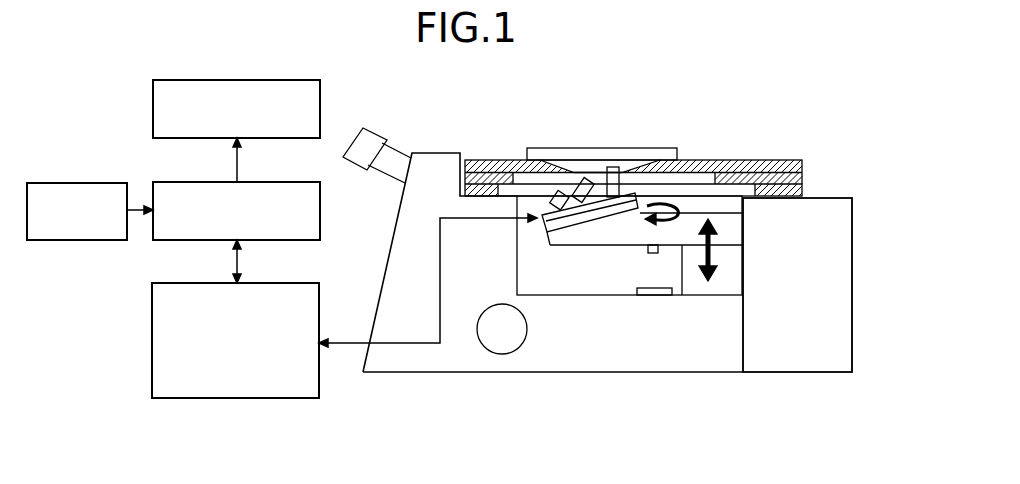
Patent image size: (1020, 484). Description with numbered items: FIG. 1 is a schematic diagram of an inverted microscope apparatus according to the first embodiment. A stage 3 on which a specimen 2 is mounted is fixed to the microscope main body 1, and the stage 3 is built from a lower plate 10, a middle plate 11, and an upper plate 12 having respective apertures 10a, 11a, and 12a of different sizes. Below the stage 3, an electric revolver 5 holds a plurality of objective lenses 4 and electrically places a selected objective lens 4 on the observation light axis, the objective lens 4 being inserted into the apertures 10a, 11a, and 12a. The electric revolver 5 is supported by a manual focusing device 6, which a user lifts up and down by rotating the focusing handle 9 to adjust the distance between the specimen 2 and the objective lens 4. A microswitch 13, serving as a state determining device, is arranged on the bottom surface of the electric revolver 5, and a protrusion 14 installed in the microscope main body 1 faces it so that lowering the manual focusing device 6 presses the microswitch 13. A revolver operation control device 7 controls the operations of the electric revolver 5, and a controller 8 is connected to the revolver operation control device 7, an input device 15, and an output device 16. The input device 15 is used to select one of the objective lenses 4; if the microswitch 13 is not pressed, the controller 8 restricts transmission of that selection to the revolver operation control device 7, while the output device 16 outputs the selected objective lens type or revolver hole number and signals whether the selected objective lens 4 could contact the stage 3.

The microscope main body 1 is at (421, 167).
The specimen 2 is at (648, 148).
The stage 3 is at (717, 159).
The objective lens 4 is at (613, 165).
The electric revolver 5 is at (575, 217).
The manual focusing device 6 is at (730, 274).
The revolver operation control device 7 is at (196, 264).
The controller 8 is at (198, 163).
The focusing handle 9 is at (508, 342).
The lower plate 10 is at (803, 186).
The aperture 10a is at (489, 193).
The middle plate 11 is at (803, 173).
The aperture 11a is at (505, 183).
The upper plate 12 is at (775, 161).
The aperture 12a is at (529, 165).
The microswitch 13 is at (658, 246).
The protrusion 14 is at (657, 297).
The input device 15 is at (63, 163).
The output device 16 is at (198, 60).